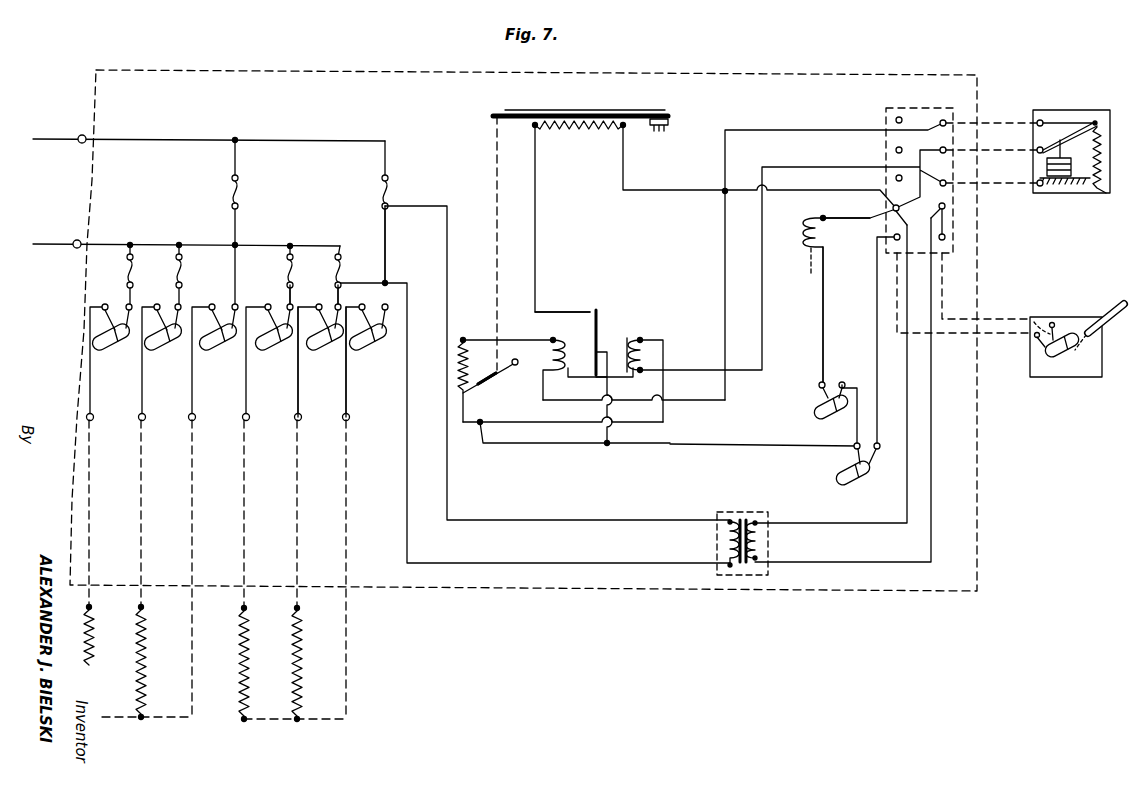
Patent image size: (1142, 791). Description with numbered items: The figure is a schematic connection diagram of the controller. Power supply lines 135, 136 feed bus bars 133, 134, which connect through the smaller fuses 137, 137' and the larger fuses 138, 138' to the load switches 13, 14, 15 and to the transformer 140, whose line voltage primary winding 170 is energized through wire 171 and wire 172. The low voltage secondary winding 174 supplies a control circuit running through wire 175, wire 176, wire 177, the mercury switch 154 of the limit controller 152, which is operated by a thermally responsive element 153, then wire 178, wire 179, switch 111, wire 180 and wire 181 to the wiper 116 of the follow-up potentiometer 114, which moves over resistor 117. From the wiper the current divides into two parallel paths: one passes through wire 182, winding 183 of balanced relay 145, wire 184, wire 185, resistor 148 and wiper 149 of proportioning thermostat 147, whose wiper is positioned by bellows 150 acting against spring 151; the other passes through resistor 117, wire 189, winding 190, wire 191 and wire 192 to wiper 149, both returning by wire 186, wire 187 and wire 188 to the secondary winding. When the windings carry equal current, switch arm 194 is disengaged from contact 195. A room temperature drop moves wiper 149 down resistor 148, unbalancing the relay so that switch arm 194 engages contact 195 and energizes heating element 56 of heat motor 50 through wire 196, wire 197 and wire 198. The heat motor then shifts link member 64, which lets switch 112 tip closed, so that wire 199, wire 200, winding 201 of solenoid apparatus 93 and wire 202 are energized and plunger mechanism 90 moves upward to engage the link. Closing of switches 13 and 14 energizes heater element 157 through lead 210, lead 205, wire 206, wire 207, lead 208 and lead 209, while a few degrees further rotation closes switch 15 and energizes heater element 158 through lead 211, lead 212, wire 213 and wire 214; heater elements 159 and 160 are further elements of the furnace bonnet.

The load switch 13 is at (379, 344).
The load switch 14 is at (329, 344).
The load switch 15 is at (276, 344).
The heat motor 50 is at (585, 109).
The heater element 56 is at (590, 131).
The link member 64 is at (497, 213).
The plunger mechanism 90 is at (811, 262).
The solenoid apparatus 93 is at (798, 221).
The switch 111 is at (856, 481).
The switch 112 is at (812, 411).
The potentiometer 114 is at (483, 363).
The wiper 116 is at (493, 383).
The resistor 117 is at (462, 347).
The bus bar 133 is at (203, 244).
The bus bar 134 is at (280, 139).
The power supply line 135 is at (56, 246).
The power supply line 136 is at (56, 141).
The fuse 137 is at (251, 276).
The fuse 137' is at (309, 276).
The fuse 138 is at (408, 212).
The fuse 138' is at (260, 223).
The transformer 140 is at (751, 511).
The balanced relay 145 is at (645, 328).
The proportioning thermostat 147 is at (1082, 110).
The resistor 148 is at (1100, 192).
The wiper 149 is at (1062, 140).
The temperature responsive bellows 150 is at (1058, 180).
The spring 151 is at (1089, 184).
The limit controller 152 is at (1050, 381).
The thermally responsive element 153 is at (1108, 309).
The mercury switch 154 is at (1080, 358).
The heater element 157 is at (300, 666).
The heater element 158 is at (247, 666).
The heater element 159 is at (144, 667).
The heater element 160 is at (93, 652).
The primary winding 170 is at (722, 548).
The wire 171 is at (572, 562).
The wire 172 is at (583, 519).
The secondary winding 174 is at (775, 544).
The wire 175 is at (900, 561).
The wire 176 is at (945, 225).
The wire 177 is at (992, 319).
The wire 178 is at (992, 336).
The wire 179 is at (876, 348).
The wire 180 is at (732, 448).
The wire 181 is at (570, 447).
The wire 182 is at (566, 422).
The winding 183 is at (640, 340).
The wire 184 is at (764, 314).
The wire 185 is at (1010, 183).
The wire 186 is at (1010, 151).
The wire 187 is at (864, 207).
The wire 188 is at (907, 378).
The wire 189 is at (523, 339).
The winding 190 is at (572, 348).
The wire 191 is at (725, 235).
The wire 192 is at (1010, 122).
The switch arm 194 is at (599, 310).
The contact 195 is at (595, 309).
The wire 196 is at (612, 435).
The wire 197 is at (537, 234).
The wire 198 is at (693, 190).
The wire 199 is at (855, 435).
The wire 200 is at (821, 355).
The winding 201 is at (804, 233).
The wire 202 is at (866, 220).
The lead 205 is at (297, 390).
The wire 206 is at (297, 500).
The wire 207 is at (346, 500).
The lead 208 is at (347, 400).
The lead 209 is at (387, 258).
The lead 210 is at (336, 298).
The lead 211 is at (288, 291).
The lead 212 is at (245, 380).
The wire 213 is at (244, 490).
The wire 214 is at (278, 722).